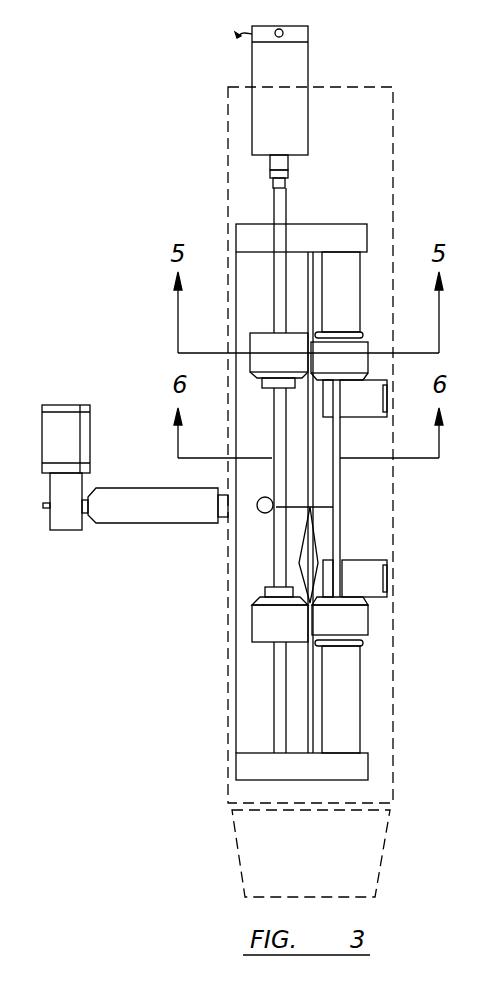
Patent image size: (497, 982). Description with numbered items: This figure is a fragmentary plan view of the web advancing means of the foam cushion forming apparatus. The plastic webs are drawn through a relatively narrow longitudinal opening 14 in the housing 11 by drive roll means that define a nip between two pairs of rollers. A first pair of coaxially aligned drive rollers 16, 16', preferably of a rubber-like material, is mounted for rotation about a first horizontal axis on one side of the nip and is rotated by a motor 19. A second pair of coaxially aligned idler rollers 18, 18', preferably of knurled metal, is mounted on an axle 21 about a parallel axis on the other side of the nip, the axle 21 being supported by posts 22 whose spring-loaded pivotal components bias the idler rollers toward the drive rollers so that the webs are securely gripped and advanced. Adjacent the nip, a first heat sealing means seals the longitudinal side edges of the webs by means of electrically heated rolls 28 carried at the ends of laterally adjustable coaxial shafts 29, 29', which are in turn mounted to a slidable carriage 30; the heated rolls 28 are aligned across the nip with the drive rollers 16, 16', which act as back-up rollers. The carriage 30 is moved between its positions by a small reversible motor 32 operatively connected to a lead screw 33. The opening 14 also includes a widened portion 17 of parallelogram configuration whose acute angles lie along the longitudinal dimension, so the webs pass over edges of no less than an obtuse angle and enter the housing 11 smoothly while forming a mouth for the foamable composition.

The housing 11 is at (393, 152).
The longitudinal opening 14 is at (310, 512).
The drive roller 16 is at (243, 614).
The drive roller 16' is at (249, 373).
The widened portion 17 is at (303, 560).
The idler roller 18 is at (385, 616).
The idler roller 18' is at (373, 345).
The motor 19 is at (300, 58).
The axle 21 is at (340, 550).
The post 22 is at (358, 408).
The heated roll 28 is at (340, 331).
The coaxial shaft 29 is at (380, 699).
The coaxial shaft 29' is at (378, 267).
The carriage 30 is at (234, 668).
The reversible motor 32 is at (67, 420).
The lead screw 33 is at (145, 512).